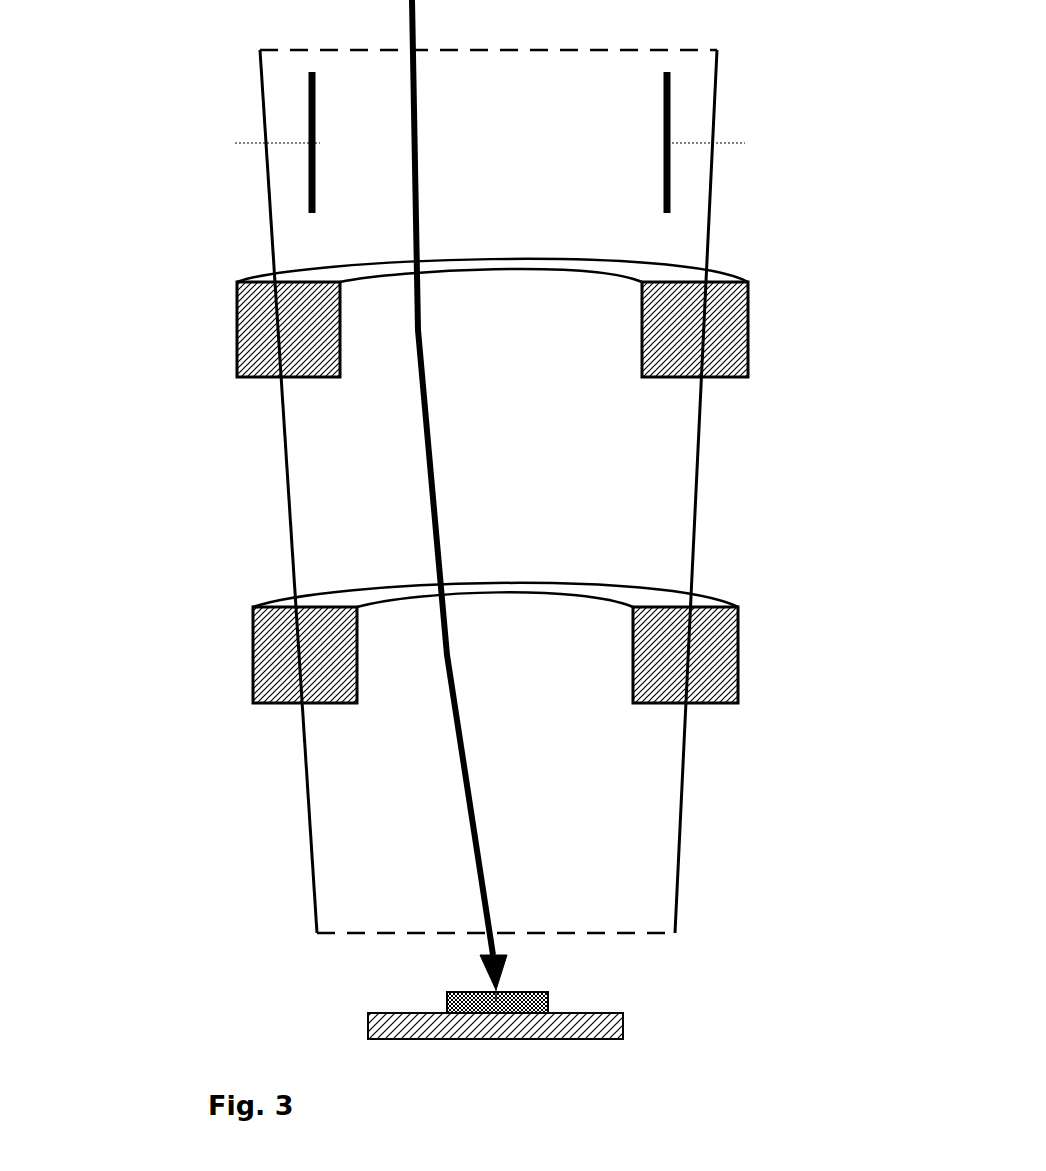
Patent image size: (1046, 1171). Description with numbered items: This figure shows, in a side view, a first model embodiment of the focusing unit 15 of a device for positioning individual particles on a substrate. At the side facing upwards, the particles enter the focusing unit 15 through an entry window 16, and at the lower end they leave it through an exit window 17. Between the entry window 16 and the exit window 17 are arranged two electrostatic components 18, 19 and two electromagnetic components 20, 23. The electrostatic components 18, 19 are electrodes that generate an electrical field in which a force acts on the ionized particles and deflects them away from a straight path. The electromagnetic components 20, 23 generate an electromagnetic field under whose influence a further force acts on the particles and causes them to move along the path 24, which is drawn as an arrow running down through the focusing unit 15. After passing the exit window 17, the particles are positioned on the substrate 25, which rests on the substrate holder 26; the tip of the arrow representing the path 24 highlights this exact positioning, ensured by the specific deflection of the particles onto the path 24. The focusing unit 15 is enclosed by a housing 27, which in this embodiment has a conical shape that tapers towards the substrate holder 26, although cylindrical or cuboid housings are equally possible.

The focusing unit 15 is at (236, 100).
The entry window 16 is at (667, 50).
The exit window 17 is at (398, 933).
The electrostatic component 18 is at (312, 192).
The electrostatic component 19 is at (667, 183).
The electromagnetic component 20 is at (272, 325).
The electromagnetic component 23 is at (300, 652).
The path 24 is at (468, 778).
The substrate 25 is at (548, 993).
The substrate holder 26 is at (605, 1022).
The housing 27 is at (288, 455).